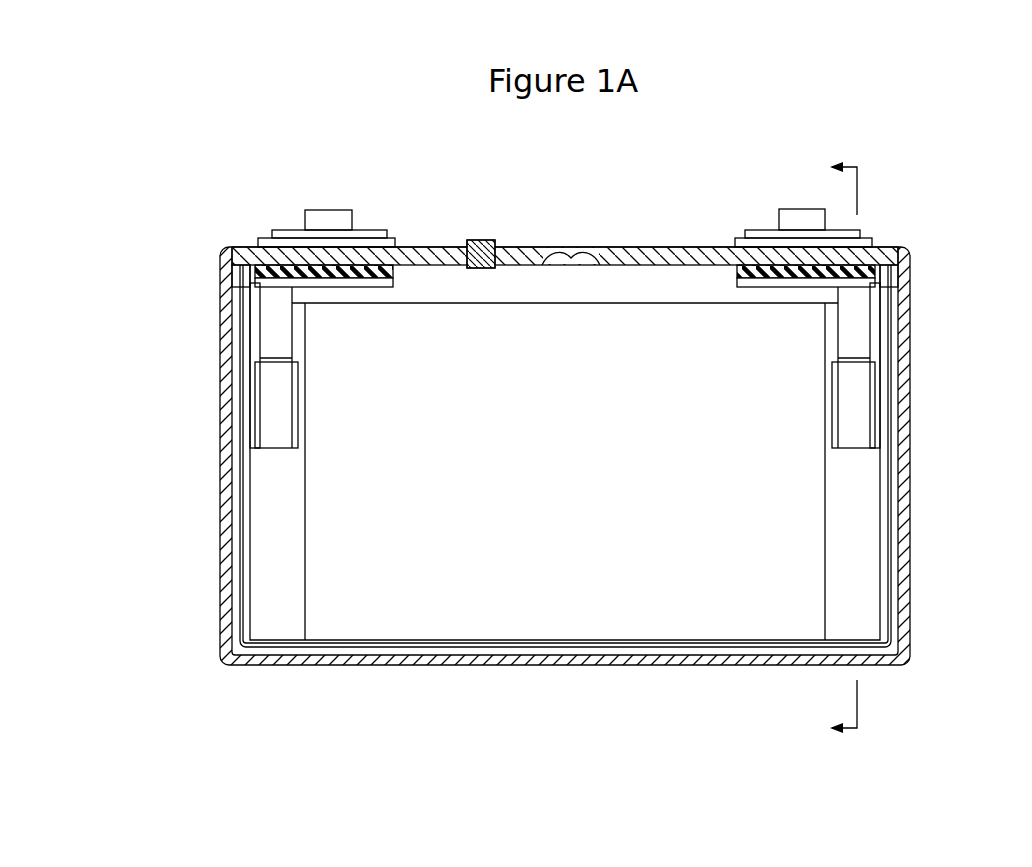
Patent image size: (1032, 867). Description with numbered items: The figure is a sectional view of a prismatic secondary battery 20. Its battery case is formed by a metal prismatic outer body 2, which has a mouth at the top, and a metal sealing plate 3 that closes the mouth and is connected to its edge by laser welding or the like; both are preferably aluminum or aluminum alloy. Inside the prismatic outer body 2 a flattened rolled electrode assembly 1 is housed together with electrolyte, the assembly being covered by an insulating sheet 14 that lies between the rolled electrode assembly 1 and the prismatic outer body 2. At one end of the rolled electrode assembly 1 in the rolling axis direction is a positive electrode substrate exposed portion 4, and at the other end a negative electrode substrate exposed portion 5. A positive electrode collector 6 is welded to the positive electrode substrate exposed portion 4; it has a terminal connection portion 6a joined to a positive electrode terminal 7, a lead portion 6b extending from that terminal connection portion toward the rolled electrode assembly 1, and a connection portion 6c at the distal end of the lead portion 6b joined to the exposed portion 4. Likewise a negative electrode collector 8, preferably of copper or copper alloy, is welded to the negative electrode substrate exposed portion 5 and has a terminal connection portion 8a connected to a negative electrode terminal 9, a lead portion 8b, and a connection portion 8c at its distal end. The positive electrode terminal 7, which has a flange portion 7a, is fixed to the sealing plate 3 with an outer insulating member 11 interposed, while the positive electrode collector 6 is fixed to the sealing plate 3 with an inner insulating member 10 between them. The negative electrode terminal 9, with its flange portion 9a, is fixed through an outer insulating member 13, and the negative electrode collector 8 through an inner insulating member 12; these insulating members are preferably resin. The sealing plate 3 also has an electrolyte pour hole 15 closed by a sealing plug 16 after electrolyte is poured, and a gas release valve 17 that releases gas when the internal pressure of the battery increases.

The prismatic secondary battery 20 is at (437, 131).
The rolled electrode assembly 1 is at (520, 637).
The prismatic outer body 2 is at (766, 662).
The sealing plate 3 is at (635, 252).
The positive electrode substrate exposed portion 4 is at (268, 628).
The negative electrode substrate exposed portion 5 is at (864, 628).
The positive electrode collector 6 is at (253, 356).
The first lead upper portion 6a is at (250, 283).
The lead portion 6b is at (270, 337).
The connection portion 6c is at (222, 405).
The positive electrode terminal 7 is at (328, 215).
The flange portion 7a is at (295, 232).
The negative electrode collector 8 is at (875, 356).
The terminal connection portion 8a is at (893, 283).
The lead portion 8b is at (858, 337).
The connection portion 8c is at (908, 405).
The negative electrode terminal 9 is at (790, 212).
The flange portion 9a is at (748, 232).
The inner insulating member 10 is at (240, 278).
The outer insulating member 11 is at (257, 243).
The inner insulating member 12 is at (882, 270).
The outer insulating member 13 is at (735, 245).
The insulating sheet 14 is at (240, 565).
The electrolyte pour hole 15 is at (468, 244).
The sealing plug 16 is at (486, 240).
The gas release valve 17 is at (566, 250).